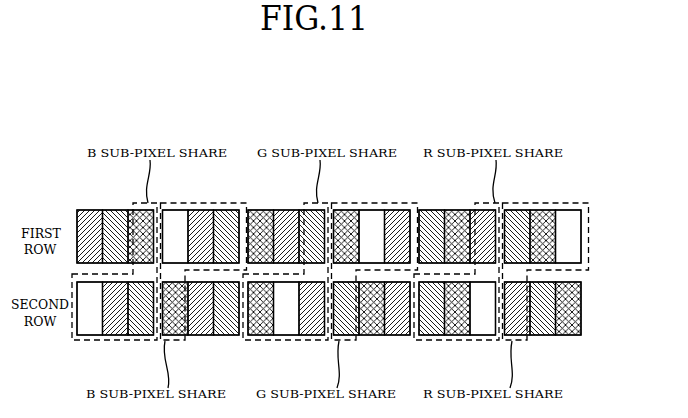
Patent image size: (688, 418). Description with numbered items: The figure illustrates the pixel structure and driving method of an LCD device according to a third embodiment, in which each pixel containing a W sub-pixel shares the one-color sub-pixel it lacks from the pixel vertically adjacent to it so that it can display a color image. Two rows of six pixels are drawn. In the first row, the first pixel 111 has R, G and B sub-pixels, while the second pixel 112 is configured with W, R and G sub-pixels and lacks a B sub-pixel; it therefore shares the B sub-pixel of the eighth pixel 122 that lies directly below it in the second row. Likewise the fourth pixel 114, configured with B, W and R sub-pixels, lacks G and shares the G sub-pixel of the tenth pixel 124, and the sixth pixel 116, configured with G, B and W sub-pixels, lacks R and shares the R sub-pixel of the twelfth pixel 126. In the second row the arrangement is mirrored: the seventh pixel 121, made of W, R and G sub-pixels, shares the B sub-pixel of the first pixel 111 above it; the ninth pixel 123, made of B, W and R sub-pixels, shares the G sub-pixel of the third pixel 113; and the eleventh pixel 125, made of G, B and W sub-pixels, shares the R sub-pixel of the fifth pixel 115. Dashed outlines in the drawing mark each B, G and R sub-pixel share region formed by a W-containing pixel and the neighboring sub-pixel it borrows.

The first pixel 111 is at (89, 202).
The second pixel 112 is at (175, 202).
The third pixel 113 is at (260, 202).
The fourth pixel 114 is at (346, 202).
The fifth pixel 115 is at (431, 202).
The sixth pixel 116 is at (517, 202).
The seventh pixel 121 is at (141, 343).
The eighth pixel 122 is at (175, 343).
The ninth pixel 123 is at (260, 343).
The tenth pixel 124 is at (398, 343).
The eleventh pixel 125 is at (431, 343).
The twelfth pixel 126 is at (517, 343).